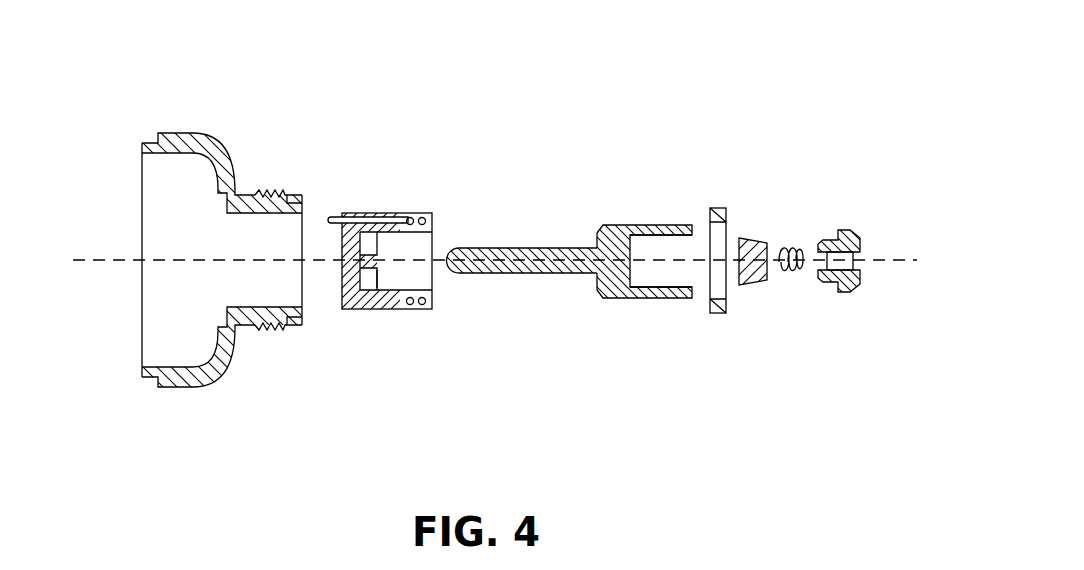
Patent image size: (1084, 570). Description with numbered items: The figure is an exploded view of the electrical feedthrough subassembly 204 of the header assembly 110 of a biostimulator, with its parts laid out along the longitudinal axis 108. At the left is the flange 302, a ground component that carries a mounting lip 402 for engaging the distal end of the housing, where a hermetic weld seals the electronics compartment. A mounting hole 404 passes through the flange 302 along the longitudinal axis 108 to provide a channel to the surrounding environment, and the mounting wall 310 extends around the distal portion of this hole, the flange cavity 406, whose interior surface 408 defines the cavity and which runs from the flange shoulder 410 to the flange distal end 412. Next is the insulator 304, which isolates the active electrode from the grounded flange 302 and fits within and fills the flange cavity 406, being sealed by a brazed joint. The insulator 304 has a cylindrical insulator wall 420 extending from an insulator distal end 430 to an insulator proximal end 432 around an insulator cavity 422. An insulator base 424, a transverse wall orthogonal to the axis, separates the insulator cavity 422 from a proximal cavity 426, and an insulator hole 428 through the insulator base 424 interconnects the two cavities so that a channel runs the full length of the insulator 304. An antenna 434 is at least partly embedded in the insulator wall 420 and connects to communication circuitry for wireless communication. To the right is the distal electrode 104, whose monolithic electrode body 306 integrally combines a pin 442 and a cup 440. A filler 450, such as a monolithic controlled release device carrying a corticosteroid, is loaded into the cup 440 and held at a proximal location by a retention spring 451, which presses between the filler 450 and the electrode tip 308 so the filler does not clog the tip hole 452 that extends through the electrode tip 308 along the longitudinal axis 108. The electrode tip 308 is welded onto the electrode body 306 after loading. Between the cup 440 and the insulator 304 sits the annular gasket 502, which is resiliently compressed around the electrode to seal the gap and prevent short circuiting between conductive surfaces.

The header assembly 110 is at (200, 53).
The electrical feedthrough subassembly 204 is at (200, 53).
The flange 302 is at (158, 113).
The insulator 304 is at (407, 158).
The distal electrode 104 is at (595, 153).
The longitudinal axis 108 is at (897, 258).
The mounting lip 402 is at (155, 390).
The mounting hole 404 is at (146, 203).
The flange cavity 406 is at (268, 240).
The interior surface 408 is at (240, 222).
The flange shoulder 410 is at (246, 185).
The flange distal end 412 is at (303, 323).
The mounting wall 310 is at (262, 330).
The insulator wall 420 is at (398, 213).
The insulator cavity 422 is at (425, 245).
The insulator base 424 is at (370, 283).
The proximal cavity 426 is at (350, 245).
The insulator hole 428 is at (382, 267).
The insulator distal end 430 is at (435, 298).
The insulator proximal end 432 is at (340, 310).
The antenna 434 is at (420, 310).
The pin 442 is at (535, 248).
The electrode body 306 is at (611, 226).
The cup 440 is at (655, 298).
The gasket 502 is at (720, 313).
The filler 450 is at (750, 215).
The retention spring 451 is at (787, 247).
The tip hole 452 is at (838, 282).
The electrode tip 308 is at (855, 292).